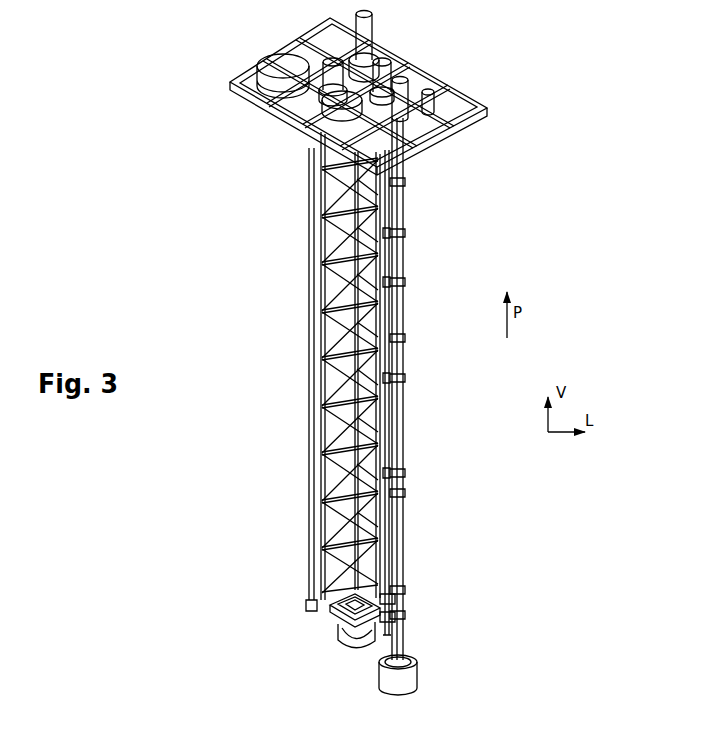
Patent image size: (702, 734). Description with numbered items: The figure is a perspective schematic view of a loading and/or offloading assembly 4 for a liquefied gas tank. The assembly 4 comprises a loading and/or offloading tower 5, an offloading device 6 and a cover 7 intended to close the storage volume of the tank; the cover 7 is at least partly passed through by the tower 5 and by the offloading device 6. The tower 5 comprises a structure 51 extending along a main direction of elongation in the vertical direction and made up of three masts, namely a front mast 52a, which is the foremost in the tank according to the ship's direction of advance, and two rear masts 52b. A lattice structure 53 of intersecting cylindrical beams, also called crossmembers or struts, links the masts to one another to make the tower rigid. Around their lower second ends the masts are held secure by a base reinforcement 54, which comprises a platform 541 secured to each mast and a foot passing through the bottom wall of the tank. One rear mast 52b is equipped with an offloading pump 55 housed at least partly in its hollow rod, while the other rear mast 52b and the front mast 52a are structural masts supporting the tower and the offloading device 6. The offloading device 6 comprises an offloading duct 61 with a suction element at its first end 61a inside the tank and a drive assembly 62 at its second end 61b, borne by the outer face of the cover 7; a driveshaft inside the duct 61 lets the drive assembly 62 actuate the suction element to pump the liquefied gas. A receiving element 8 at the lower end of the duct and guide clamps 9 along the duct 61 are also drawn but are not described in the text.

The loading and/or offloading assembly 4 is at (339, 394).
The loading and/or offloading tower 5 is at (347, 394).
The structure 51 is at (286, 508).
The front mast 52a is at (388, 326).
The rear mast 52b is at (322, 518).
The lattice structure 53 is at (345, 380).
The base reinforcement 54 is at (340, 590).
The platform 541 is at (336, 632).
The offloading pump 55 is at (386, 594).
The offloading device 6 is at (437, 389).
The offloading duct 61 is at (433, 389).
The first end of the offloading duct 61a is at (402, 606).
The second end of the offloading duct 61b is at (402, 195).
The drive assembly 62 is at (408, 75).
The cover 7 is at (412, 39).
The receiving socket 8 is at (438, 671).
The guide clamps 9 is at (416, 281).